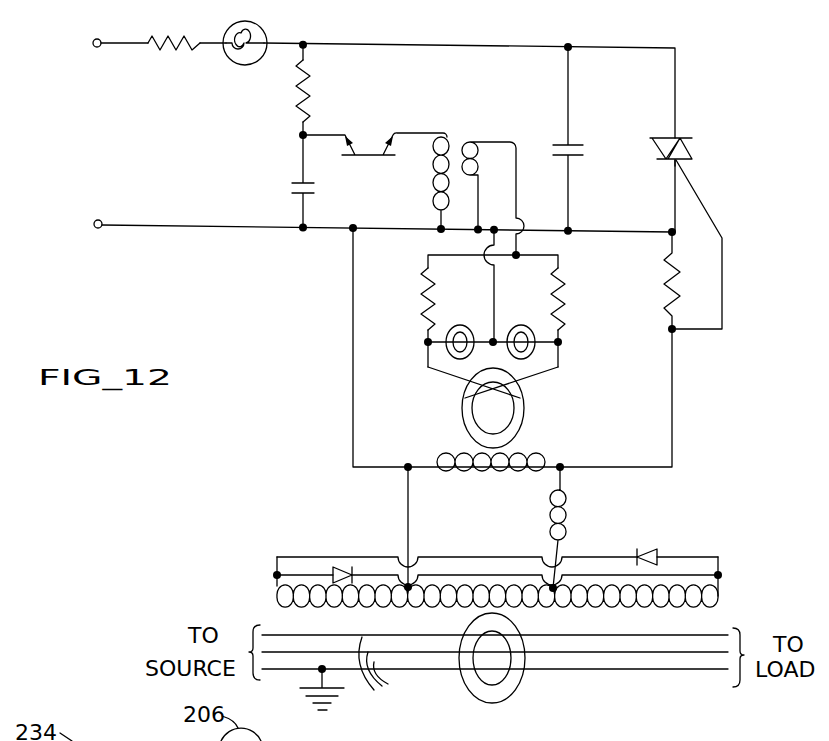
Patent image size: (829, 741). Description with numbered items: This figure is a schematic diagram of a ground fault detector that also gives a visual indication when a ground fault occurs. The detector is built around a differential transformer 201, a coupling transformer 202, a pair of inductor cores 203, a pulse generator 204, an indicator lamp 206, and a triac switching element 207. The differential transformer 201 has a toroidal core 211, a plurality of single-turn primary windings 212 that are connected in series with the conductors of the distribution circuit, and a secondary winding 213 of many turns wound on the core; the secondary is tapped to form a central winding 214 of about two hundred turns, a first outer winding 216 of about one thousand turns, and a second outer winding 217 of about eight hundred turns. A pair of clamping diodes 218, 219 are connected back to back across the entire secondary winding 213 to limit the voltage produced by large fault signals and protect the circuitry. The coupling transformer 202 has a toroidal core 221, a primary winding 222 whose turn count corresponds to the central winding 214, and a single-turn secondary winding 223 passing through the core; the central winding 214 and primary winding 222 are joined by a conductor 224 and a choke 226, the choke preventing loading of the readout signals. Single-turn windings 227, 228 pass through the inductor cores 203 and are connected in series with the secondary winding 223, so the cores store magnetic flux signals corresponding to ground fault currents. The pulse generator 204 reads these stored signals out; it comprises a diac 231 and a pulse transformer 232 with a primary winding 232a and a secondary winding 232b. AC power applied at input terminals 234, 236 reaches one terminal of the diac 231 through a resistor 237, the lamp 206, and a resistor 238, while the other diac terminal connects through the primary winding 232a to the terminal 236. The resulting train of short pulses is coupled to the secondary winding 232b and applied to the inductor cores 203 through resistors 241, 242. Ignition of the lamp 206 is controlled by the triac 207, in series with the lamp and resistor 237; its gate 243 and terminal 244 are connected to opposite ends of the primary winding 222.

The differential transformer 201 is at (508, 675).
The coupling transformer 202 is at (503, 339).
The inductor cores 203 is at (458, 325).
The pulse generator 204 is at (419, 135).
The indicator lamp 206 is at (262, 37).
The triac switching element 207 is at (692, 149).
The toroidal core 211 is at (508, 687).
The single-turn primary windings 212 is at (393, 671).
The secondary winding 213 is at (542, 578).
The central winding 214 is at (470, 608).
The first outer winding 216 is at (368, 608).
The second outer winding 217 is at (676, 612).
The clamping diode 218 is at (660, 552).
The clamping diode 219 is at (343, 565).
The toroidal core 221 is at (462, 410).
The primary winding 222 is at (512, 480).
The single-turn secondary winding 223 is at (545, 382).
The conductor 224 is at (404, 505).
The choke 226 is at (566, 520).
The single-turn winding 227 is at (424, 341).
The single-turn winding 228 is at (565, 352).
The diac 231 is at (364, 163).
The pulse transformer 232 is at (461, 168).
The primary winding 232a is at (433, 186).
The secondary winding 232b is at (452, 132).
The input terminal 234 is at (92, 44).
The input terminal 236 is at (94, 220).
The resistor 237 is at (178, 56).
The resistor 238 is at (312, 106).
The resistor 241 is at (421, 304).
The resistor 242 is at (566, 300).
The gate 243 is at (706, 204).
The terminal 244 is at (665, 163).